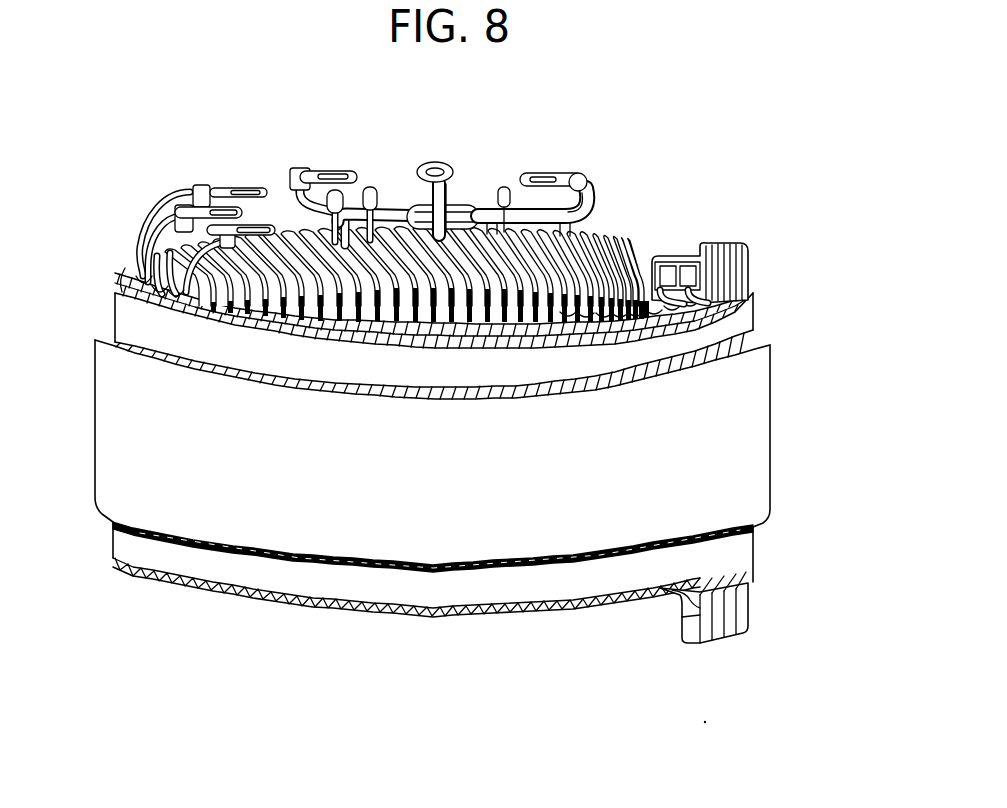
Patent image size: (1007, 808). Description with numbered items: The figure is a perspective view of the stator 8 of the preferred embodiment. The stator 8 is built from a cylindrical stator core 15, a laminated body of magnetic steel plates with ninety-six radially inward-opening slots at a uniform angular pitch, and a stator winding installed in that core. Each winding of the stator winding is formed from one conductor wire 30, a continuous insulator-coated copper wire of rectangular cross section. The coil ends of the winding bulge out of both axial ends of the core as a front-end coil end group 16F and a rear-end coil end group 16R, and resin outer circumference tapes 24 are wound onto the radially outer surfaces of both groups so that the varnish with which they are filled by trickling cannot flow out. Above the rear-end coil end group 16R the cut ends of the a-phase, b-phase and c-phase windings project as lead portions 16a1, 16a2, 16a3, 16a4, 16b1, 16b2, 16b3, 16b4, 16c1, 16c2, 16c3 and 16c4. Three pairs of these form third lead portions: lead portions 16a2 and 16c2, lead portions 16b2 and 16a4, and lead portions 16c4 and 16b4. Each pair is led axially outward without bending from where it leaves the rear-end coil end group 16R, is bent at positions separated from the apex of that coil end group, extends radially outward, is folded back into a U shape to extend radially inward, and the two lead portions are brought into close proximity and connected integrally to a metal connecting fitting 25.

The stator 8 is at (744, 117).
The stator core 15 is at (762, 444).
The resin outer circumference tape 24 is at (745, 319).
The metal connecting fitting 25 is at (550, 172).
The conductor wire 30 is at (580, 238).
The rear-end coil end group 16R is at (678, 242).
The front-end coil end group 16F is at (569, 618).
The lead portion 16a1 is at (330, 177).
The lead portion 16a2 is at (298, 200).
The lead portion 16a3 is at (343, 213).
The lead portion 16a4 is at (437, 168).
The lead portion 16b1 is at (457, 203).
The lead portion 16b2 is at (417, 160).
The lead portion 16b3 is at (503, 187).
The lead portion 16b4 is at (587, 212).
The lead portion 16c1 is at (367, 187).
The lead portion 16c2 is at (292, 197).
The lead portion 16c3 is at (398, 200).
The lead portion 16c4 is at (583, 190).